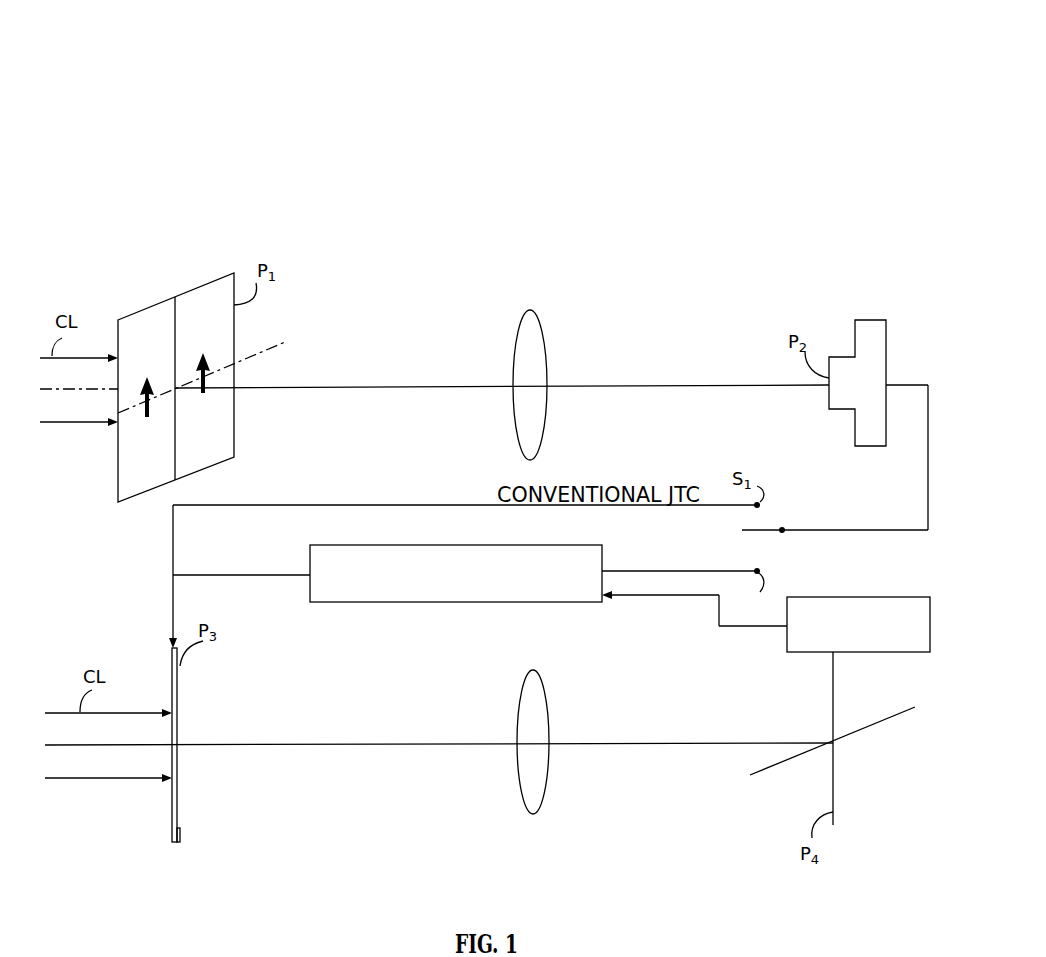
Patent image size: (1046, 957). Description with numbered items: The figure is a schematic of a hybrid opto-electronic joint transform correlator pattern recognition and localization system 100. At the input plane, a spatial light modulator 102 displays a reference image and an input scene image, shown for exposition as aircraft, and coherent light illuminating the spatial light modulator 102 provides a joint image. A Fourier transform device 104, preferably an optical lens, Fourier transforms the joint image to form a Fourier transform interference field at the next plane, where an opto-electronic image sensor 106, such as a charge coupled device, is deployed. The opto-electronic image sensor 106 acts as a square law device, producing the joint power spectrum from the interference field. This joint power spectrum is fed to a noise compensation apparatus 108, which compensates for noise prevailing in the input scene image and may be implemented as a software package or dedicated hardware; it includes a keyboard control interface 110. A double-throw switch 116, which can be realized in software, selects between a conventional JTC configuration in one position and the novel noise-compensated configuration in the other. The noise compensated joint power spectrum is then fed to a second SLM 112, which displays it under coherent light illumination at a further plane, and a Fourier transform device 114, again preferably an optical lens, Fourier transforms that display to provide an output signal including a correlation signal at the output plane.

The hybrid opto-electronic joint transform correlator pattern recognition and locali 100 is at (716, 67).
The spatial light modulator 102 is at (152, 318).
The Fourier transform device 104 is at (531, 320).
The opto-electronic image sensor 106 is at (868, 320).
The noise compensation apparatus 108 is at (562, 594).
The keyboard control interface 110 is at (910, 640).
The second SLM 112 is at (178, 835).
The Fourier transform device 114 is at (539, 806).
The double-throw switch 116 is at (771, 531).